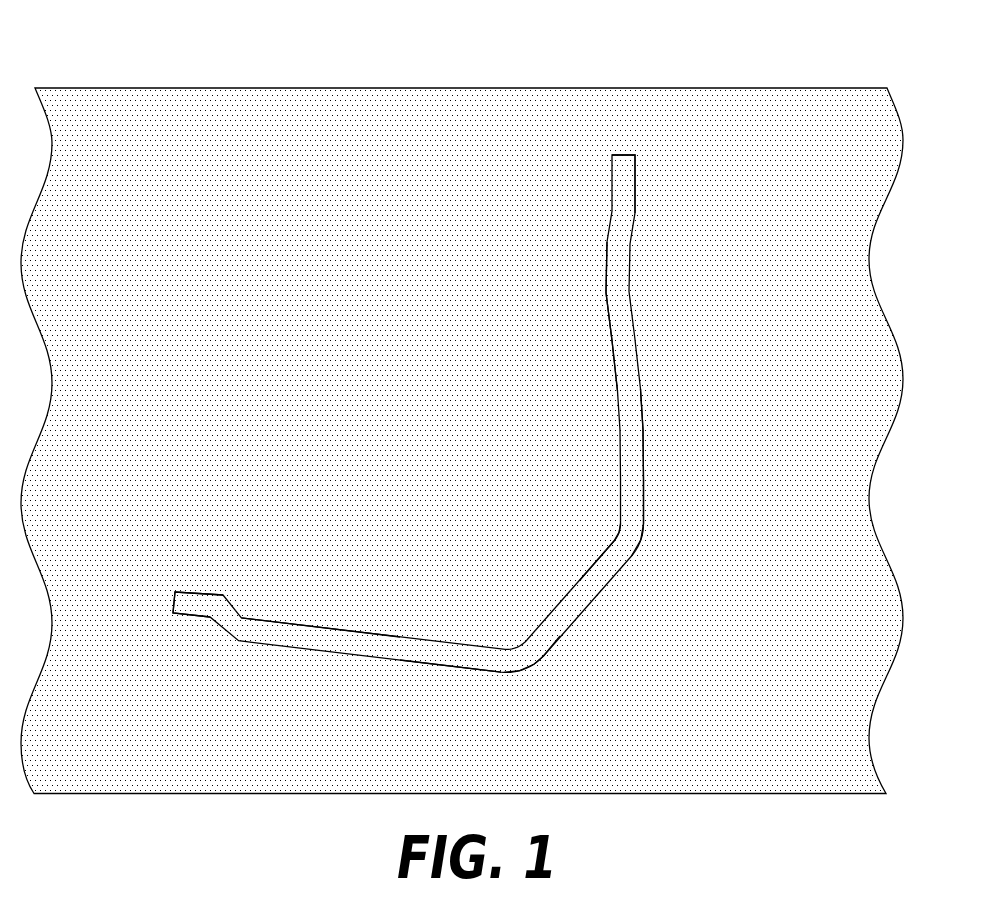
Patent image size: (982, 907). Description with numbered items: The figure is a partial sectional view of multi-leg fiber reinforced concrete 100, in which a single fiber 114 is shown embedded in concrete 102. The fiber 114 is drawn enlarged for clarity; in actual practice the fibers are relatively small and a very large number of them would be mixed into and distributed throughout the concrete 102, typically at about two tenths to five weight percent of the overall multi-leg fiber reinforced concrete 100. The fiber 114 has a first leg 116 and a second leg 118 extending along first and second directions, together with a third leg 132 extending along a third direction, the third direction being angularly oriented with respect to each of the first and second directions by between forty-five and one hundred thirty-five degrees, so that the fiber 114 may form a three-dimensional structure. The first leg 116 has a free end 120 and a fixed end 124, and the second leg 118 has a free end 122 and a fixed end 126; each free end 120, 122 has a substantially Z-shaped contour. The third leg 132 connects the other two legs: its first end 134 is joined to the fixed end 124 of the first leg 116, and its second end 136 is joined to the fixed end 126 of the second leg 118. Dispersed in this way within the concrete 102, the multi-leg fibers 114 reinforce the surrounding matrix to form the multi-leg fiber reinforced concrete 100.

The multi-leg fiber reinforced concrete 100 is at (166, 57).
The concrete 102 is at (783, 100).
The fiber 114 is at (502, 357).
The first leg 116 is at (322, 625).
The second leg 118 is at (607, 304).
The free end 120 is at (208, 590).
The free end 122 is at (636, 176).
The fixed end 124 is at (478, 668).
The fixed end 126 is at (648, 488).
The third leg 132 is at (574, 580).
The first end 134 is at (545, 673).
The second end 136 is at (641, 540).